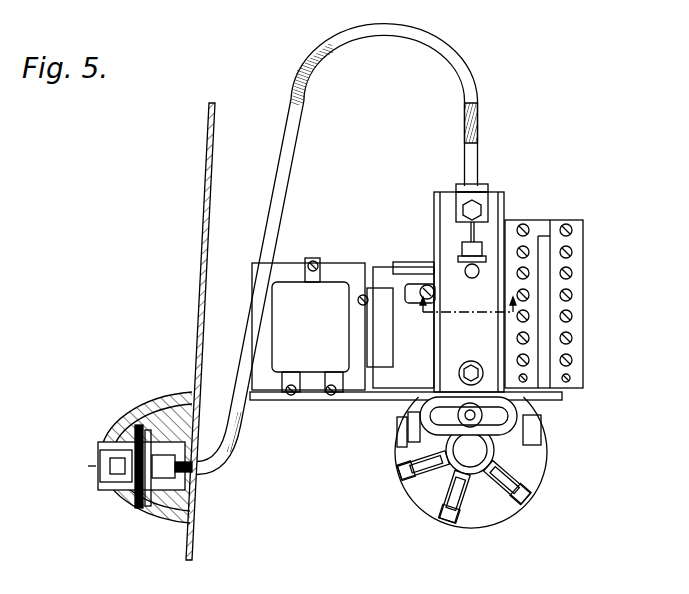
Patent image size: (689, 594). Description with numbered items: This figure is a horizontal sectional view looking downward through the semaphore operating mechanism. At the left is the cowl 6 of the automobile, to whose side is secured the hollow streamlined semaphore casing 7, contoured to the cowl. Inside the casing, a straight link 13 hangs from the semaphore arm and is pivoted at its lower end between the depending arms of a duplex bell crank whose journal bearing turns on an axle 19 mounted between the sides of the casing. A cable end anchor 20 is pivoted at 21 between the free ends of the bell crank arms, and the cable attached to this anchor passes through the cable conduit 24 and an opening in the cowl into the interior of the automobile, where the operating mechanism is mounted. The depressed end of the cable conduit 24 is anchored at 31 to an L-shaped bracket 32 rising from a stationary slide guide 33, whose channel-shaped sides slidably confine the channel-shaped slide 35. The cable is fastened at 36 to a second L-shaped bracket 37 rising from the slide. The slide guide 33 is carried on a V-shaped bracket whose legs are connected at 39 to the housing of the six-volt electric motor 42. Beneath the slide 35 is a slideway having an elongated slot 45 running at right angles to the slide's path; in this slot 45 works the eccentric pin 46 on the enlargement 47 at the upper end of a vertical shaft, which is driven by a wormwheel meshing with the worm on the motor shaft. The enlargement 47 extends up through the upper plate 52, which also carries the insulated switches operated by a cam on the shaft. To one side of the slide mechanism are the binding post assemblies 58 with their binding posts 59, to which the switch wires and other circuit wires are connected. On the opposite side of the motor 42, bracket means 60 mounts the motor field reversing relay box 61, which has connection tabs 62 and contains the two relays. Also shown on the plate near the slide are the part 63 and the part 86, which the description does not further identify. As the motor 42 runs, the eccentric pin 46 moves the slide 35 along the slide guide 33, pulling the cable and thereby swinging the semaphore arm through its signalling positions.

The cowl 6 is at (200, 215).
The semaphore casing 7 is at (131, 412).
The straight link 13 is at (128, 480).
The axle 19 is at (146, 492).
The cable end anchor 20 is at (190, 468).
The pivot 21 is at (162, 482).
The cable conduit 24 is at (236, 442).
The anchor 31 is at (489, 191).
The L-shaped bracket 32 is at (485, 205).
The stationary slide guide 33 is at (440, 209).
The channel-shaped slide 35 is at (468, 358).
The cable fastening 36 is at (460, 249).
The L-shaped bracket 37 is at (433, 283).
The bracket connection 39 is at (426, 286).
The electric motor 42 is at (376, 393).
The elongated slot 45 is at (410, 437).
The eccentric pin 46 is at (518, 414).
The enlargement 47 is at (540, 455).
The upper plate 52 is at (524, 498).
The binding post assemblies 58 is at (585, 292).
The binding posts 59 is at (572, 252).
The bracket means 60 is at (350, 393).
The motor field reversing relay box 61 is at (292, 281).
The connection tabs 62 is at (292, 395).
The contact 63 is at (400, 452).
The spring 86 is at (400, 424).